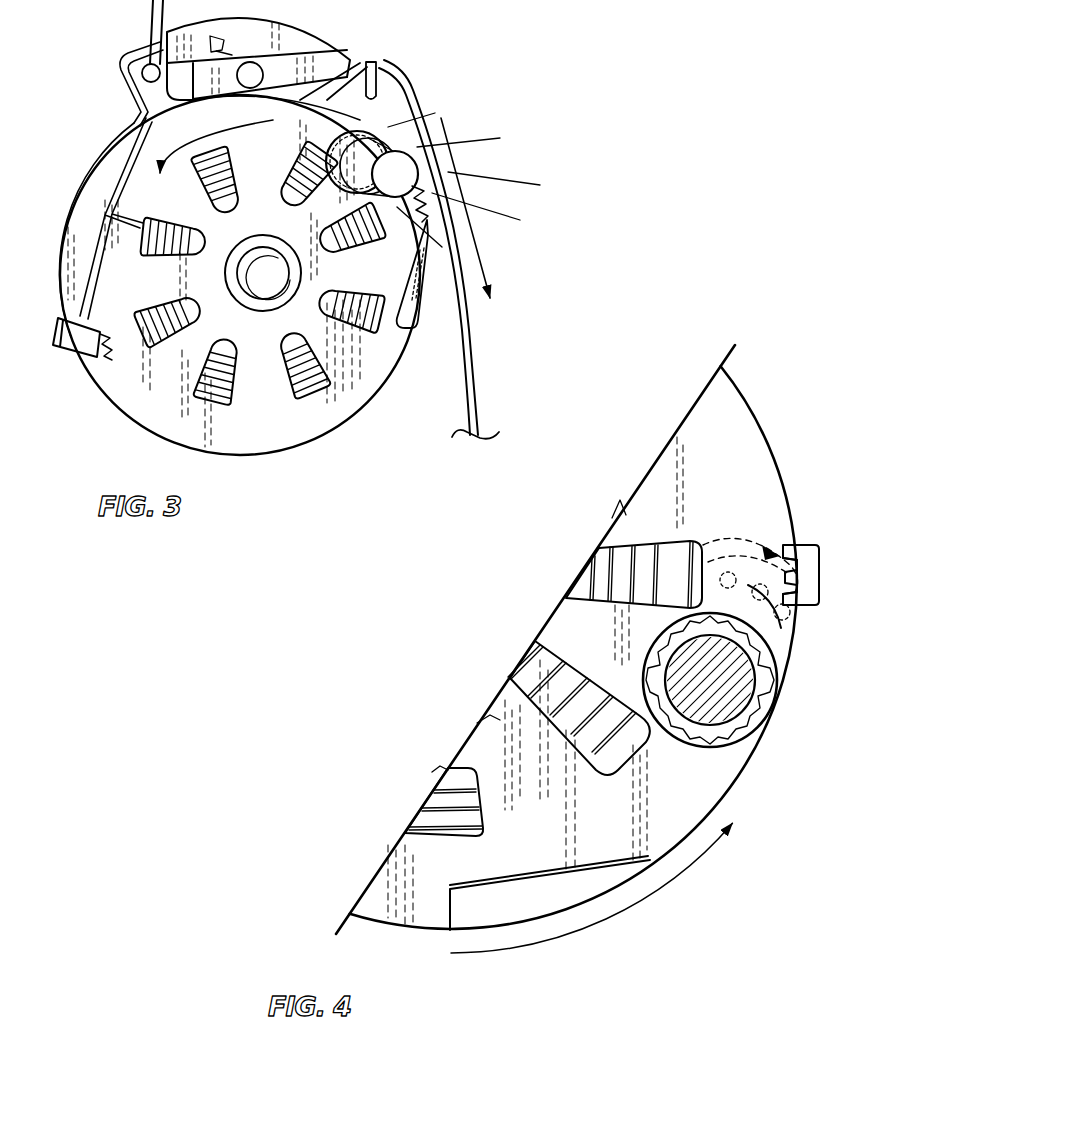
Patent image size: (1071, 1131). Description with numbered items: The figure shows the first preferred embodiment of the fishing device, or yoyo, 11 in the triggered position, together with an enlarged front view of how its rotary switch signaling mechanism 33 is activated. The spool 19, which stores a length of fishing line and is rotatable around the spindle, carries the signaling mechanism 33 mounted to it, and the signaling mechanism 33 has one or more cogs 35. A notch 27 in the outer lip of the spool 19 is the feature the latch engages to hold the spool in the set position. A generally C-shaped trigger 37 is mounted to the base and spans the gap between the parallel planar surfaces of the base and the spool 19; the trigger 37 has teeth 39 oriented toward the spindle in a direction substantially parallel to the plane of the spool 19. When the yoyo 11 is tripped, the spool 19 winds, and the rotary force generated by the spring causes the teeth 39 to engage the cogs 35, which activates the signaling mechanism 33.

In FIG. 3, the fishing device 11 is at (352, 453).
In FIG. 4, the fishing device 11 is at (508, 610).
In FIG. 3, the spool 19 is at (163, 195).
In FIG. 4, the spool 19 is at (708, 472).
In FIG. 4, the notch 27 is at (560, 882).
In FIG. 4, the signaling mechanism 33 is at (722, 706).
In FIG. 4, the cogs 35 is at (738, 742).
In FIG. 4, the trigger 37 is at (818, 548).
In FIG. 4, the teeth 39 is at (797, 573).